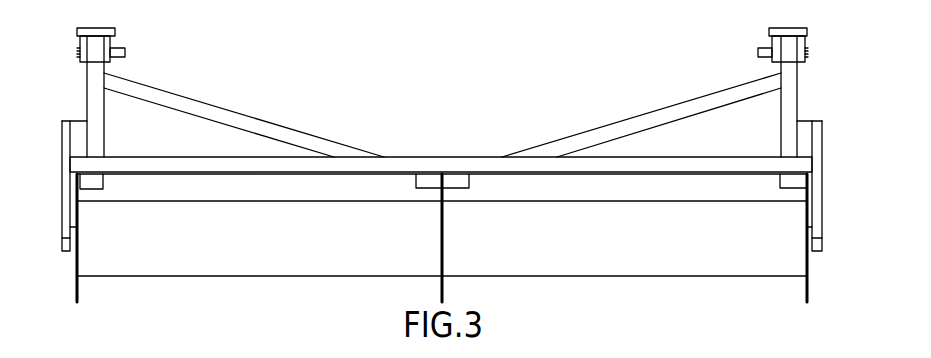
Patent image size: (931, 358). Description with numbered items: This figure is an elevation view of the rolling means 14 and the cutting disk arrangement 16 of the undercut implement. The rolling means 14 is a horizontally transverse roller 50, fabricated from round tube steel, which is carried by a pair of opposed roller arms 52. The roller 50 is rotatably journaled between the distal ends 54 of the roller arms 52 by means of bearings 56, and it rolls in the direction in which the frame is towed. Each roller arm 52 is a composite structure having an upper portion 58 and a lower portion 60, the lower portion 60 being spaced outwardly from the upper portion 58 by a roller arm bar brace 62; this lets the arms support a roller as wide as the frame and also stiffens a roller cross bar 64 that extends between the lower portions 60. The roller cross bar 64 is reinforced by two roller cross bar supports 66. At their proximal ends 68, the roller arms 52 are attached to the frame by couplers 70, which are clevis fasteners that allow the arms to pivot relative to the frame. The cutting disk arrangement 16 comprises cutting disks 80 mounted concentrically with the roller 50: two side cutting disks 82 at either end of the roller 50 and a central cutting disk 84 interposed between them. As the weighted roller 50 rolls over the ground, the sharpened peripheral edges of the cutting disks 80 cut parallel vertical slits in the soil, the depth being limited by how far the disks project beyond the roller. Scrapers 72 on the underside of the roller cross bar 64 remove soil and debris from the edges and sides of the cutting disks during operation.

The rolling means 14 is at (182, 312).
The cutting disk arrangement 16 is at (812, 265).
The roller 50 is at (270, 251).
The roller arms 52 is at (56, 157).
The distal ends 54 is at (63, 250).
The bearings 56 is at (75, 253).
The upper portions 58 is at (87, 81).
The lower portions 60 is at (62, 193).
The roller arm bar braces 62 is at (80, 120).
The roller cross bar 64 is at (443, 157).
The roller cross bar supports 66 is at (243, 114).
The proximal ends 68 is at (80, 45).
The couplers 70 is at (100, 28).
The scrapers 72 is at (103, 182).
The cutting disks 80 is at (79, 312).
The side cutting disks 82 is at (78, 290).
The central cutting disk 84 is at (444, 290).